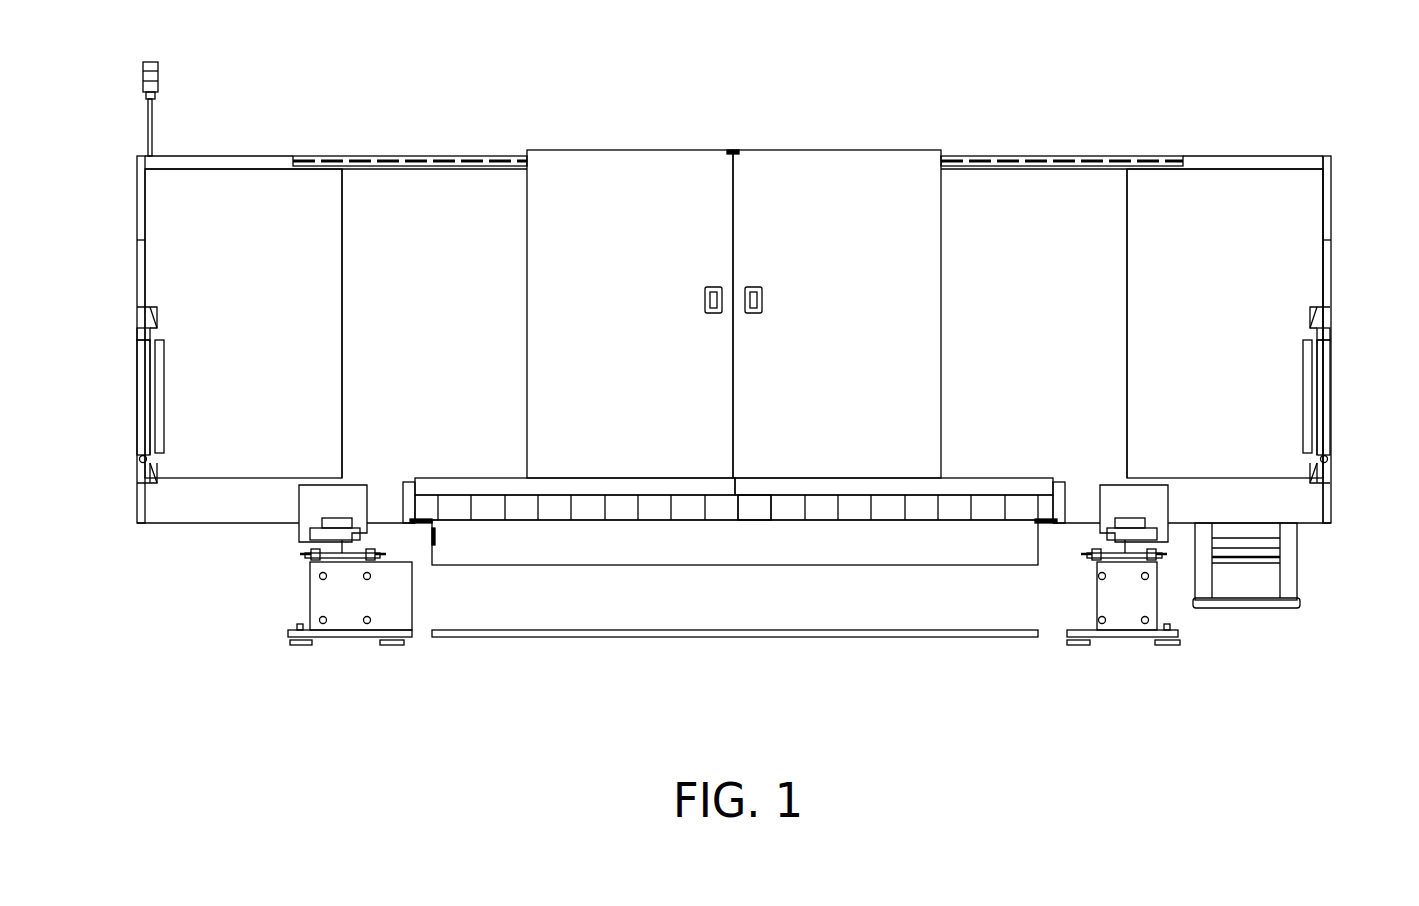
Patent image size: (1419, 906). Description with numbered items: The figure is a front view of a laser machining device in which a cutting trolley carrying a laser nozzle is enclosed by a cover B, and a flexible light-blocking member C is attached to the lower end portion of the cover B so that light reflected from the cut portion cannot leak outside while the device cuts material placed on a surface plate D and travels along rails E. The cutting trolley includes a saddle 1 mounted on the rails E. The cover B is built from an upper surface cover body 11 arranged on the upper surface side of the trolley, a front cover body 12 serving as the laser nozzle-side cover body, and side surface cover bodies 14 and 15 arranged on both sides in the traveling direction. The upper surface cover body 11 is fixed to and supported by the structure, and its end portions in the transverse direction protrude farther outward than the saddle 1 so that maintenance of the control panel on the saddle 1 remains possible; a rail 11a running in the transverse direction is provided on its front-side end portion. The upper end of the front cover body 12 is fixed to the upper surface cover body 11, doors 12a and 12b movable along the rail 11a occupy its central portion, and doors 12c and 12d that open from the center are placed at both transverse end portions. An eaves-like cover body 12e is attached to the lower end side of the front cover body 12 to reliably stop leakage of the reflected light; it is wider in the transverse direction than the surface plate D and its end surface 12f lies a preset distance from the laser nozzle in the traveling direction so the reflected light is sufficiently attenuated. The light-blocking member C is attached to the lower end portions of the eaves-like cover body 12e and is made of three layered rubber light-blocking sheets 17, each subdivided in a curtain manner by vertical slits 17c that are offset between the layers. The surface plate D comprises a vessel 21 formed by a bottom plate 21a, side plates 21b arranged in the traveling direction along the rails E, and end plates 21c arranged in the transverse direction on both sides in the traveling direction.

The saddle 1 is at (318, 495).
The upper surface cover body 11 is at (1243, 160).
The rail 11a is at (1157, 158).
The front cover body 12 is at (744, 255).
The door 12a is at (828, 183).
The door 12b is at (628, 178).
The door 12c is at (1282, 238).
The door 12d is at (188, 266).
The eaves-like cover body 12e is at (628, 483).
The end surface 12f is at (808, 483).
The side surface cover body 14 is at (1331, 225).
The side surface cover body 15 is at (140, 210).
The light-blocking sheet 17 is at (734, 547).
The slit 17c is at (770, 508).
The vessel 21 is at (734, 635).
The bottom plate 21a is at (820, 637).
The side plate 21b is at (428, 553).
The end plate 21c is at (920, 553).
The cover B is at (401, 150).
The light-blocking member C is at (411, 504).
The surface plate D is at (603, 547).
The rail E is at (342, 540).